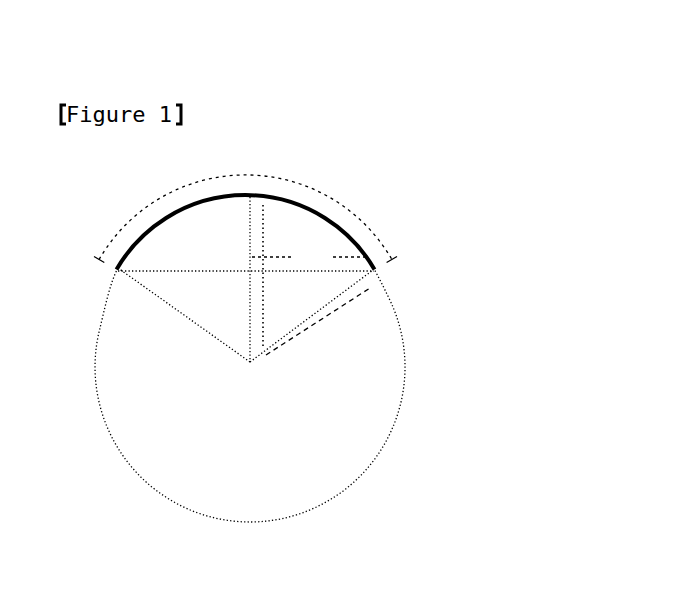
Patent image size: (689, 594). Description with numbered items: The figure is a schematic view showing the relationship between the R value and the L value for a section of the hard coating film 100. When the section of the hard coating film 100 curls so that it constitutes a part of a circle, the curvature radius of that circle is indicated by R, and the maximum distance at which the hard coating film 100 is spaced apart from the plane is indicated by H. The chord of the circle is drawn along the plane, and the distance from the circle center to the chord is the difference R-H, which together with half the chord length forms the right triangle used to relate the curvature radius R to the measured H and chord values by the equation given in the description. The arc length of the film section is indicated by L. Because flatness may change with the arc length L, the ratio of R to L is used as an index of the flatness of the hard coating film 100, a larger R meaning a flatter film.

The hard coating film 100 is at (357, 222).
The arc length L is at (245, 214).
The maximum distance H is at (274, 276).
The curvature radius R is at (318, 321).
The difference between curvature radius and maximum distance R-H is at (284, 304).